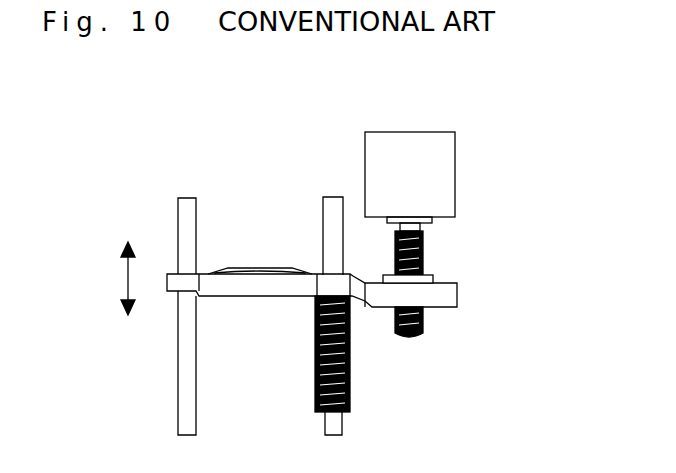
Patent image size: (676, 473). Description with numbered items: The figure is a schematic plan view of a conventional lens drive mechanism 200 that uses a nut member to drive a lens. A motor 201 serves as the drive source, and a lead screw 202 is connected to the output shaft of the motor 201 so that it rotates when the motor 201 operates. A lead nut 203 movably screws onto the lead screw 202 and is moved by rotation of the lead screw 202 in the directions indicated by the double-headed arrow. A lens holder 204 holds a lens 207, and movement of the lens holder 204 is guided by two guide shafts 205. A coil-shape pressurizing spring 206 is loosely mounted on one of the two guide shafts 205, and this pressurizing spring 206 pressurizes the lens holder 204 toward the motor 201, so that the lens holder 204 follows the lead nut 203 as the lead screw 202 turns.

The conventional lens drive mechanism 200 is at (228, 132).
The motor 201 is at (447, 155).
The lead screw 202 is at (425, 323).
The lead nut 203 is at (433, 277).
The lens holder 204 is at (270, 296).
The guide shafts 205 is at (183, 422).
The pressurizing spring 206 is at (350, 380).
The lens 207 is at (250, 266).